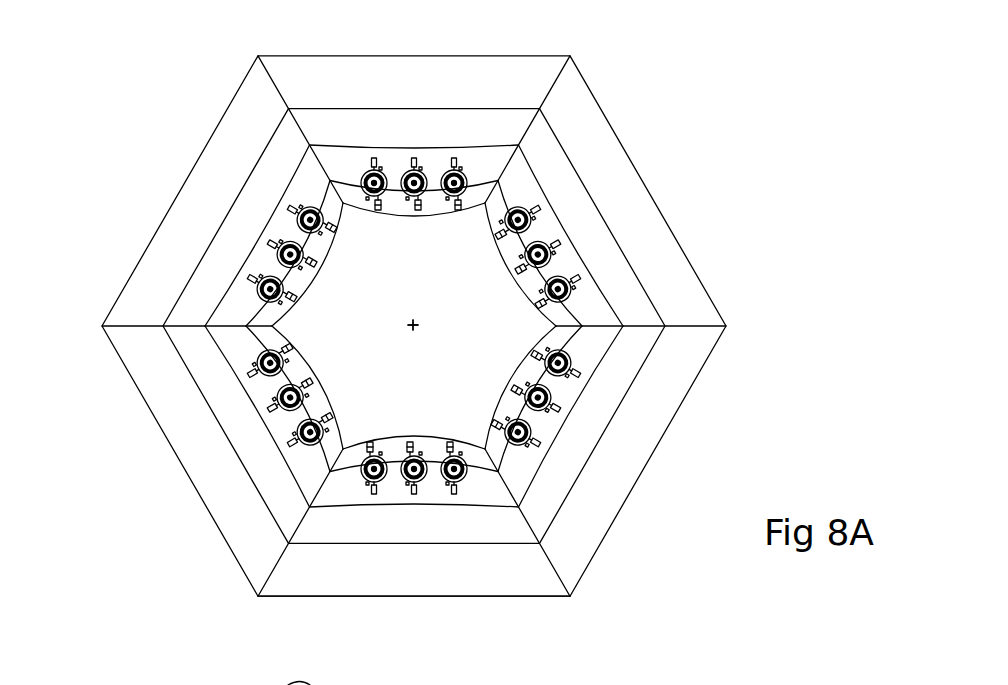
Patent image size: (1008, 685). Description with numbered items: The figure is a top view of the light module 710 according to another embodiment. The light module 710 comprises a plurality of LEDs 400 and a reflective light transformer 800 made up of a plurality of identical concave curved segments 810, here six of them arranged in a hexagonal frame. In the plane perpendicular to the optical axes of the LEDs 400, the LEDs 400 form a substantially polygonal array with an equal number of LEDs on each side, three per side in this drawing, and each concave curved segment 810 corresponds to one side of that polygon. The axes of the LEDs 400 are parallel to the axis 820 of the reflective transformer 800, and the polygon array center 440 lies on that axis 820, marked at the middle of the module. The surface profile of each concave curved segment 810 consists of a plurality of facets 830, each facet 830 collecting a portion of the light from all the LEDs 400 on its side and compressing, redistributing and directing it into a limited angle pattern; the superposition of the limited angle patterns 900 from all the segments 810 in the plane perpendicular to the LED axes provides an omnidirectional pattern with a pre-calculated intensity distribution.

The limited angle pattern 900 is at (245, 34).
The reflective light transformer 800 is at (606, 97).
The facets 830 is at (557, 313).
The polygon array center 440 is at (398, 308).
The axis 820 is at (463, 302).
The LEDs 400 is at (300, 355).
The concave curved segments 810 is at (345, 605).
The light module 710 is at (597, 593).